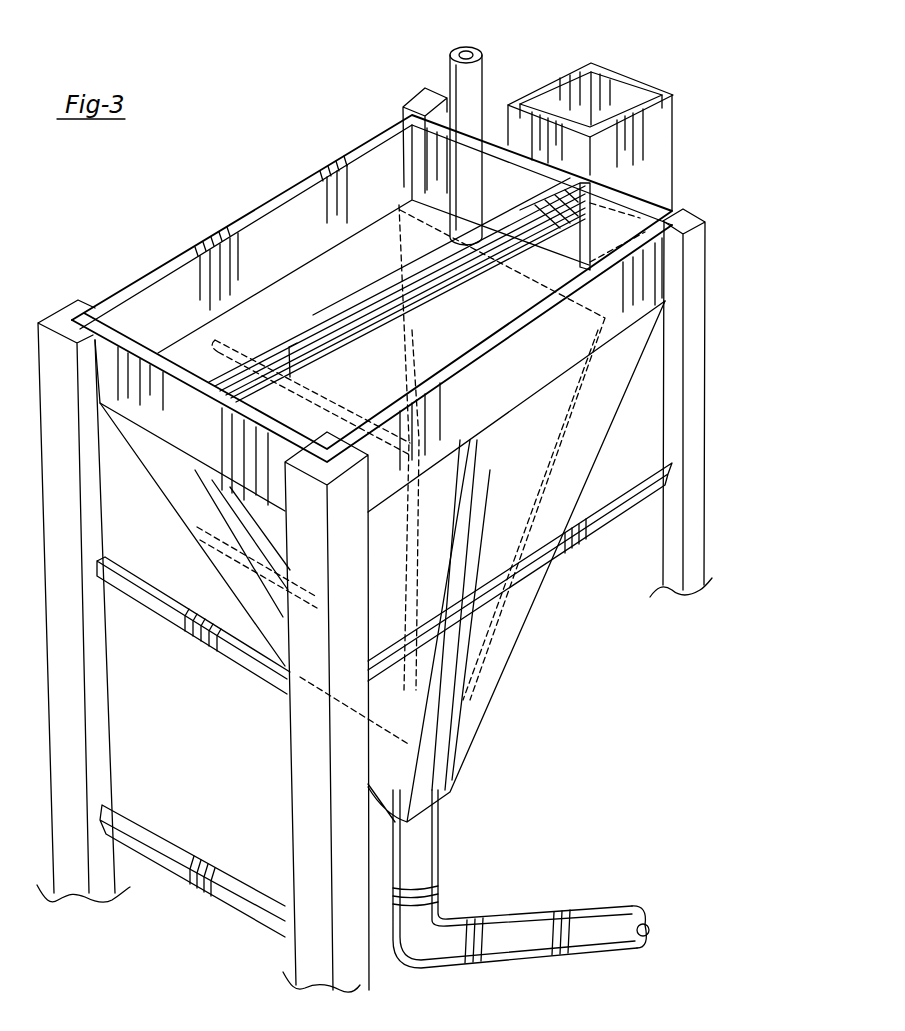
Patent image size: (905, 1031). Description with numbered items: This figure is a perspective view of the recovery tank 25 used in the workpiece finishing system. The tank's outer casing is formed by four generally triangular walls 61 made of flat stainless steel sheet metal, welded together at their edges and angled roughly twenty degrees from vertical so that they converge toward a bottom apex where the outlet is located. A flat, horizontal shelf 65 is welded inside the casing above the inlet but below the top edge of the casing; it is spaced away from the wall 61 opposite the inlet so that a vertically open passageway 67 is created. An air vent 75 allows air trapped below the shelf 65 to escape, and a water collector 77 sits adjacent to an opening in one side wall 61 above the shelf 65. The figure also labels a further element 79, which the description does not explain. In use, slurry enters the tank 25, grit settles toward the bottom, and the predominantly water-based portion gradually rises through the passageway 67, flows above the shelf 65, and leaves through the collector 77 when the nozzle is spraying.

The recovery tank 25 is at (672, 710).
The walls 61 is at (437, 150).
The shelf 65 is at (347, 273).
The passageway 67 is at (198, 357).
The air vent 75 is at (473, 112).
The water collector 77 is at (645, 157).
The inlet chute 79 is at (500, 180).